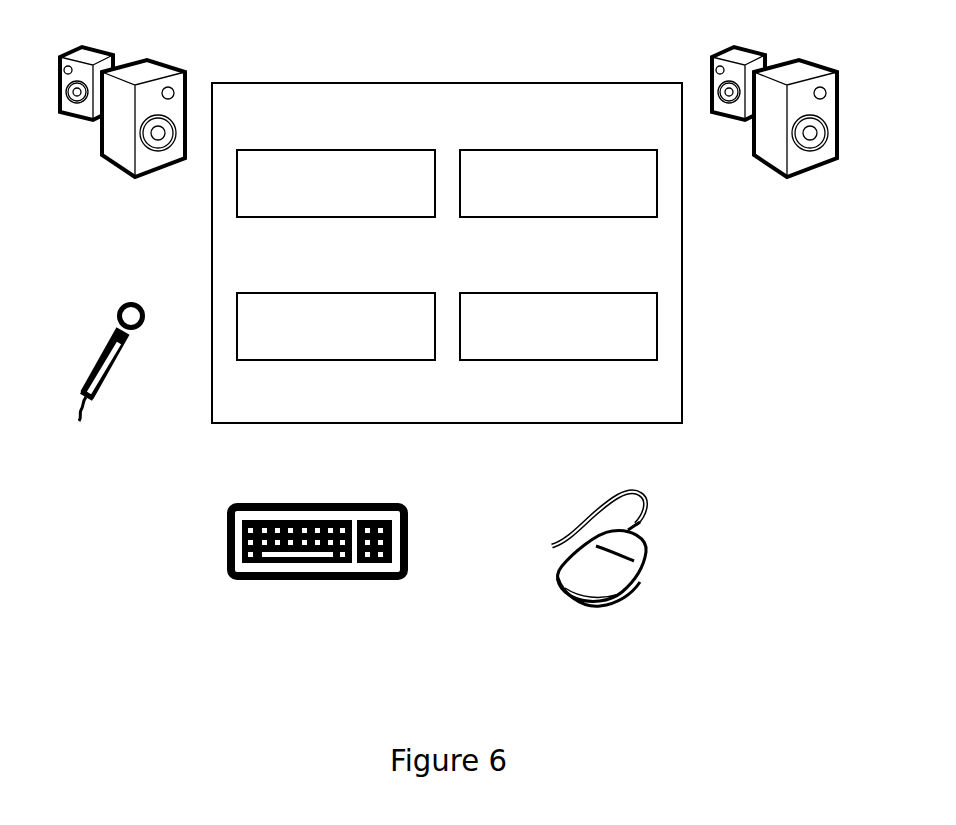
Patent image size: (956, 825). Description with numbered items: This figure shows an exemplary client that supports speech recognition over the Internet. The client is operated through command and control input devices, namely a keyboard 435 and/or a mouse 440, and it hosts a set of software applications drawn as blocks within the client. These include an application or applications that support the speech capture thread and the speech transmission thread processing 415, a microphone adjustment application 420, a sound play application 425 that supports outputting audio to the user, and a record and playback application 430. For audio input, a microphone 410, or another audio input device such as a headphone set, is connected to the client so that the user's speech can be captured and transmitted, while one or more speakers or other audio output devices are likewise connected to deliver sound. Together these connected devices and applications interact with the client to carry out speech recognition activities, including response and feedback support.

The microphone 410 is at (108, 387).
The speech capture and transmission processing 415 is at (337, 148).
The microphone adjustment application 420 is at (335, 292).
The sound play application 425 is at (557, 148).
The record and playback application 430 is at (557, 292).
The keyboard 435 is at (317, 582).
The mouse 440 is at (603, 618).